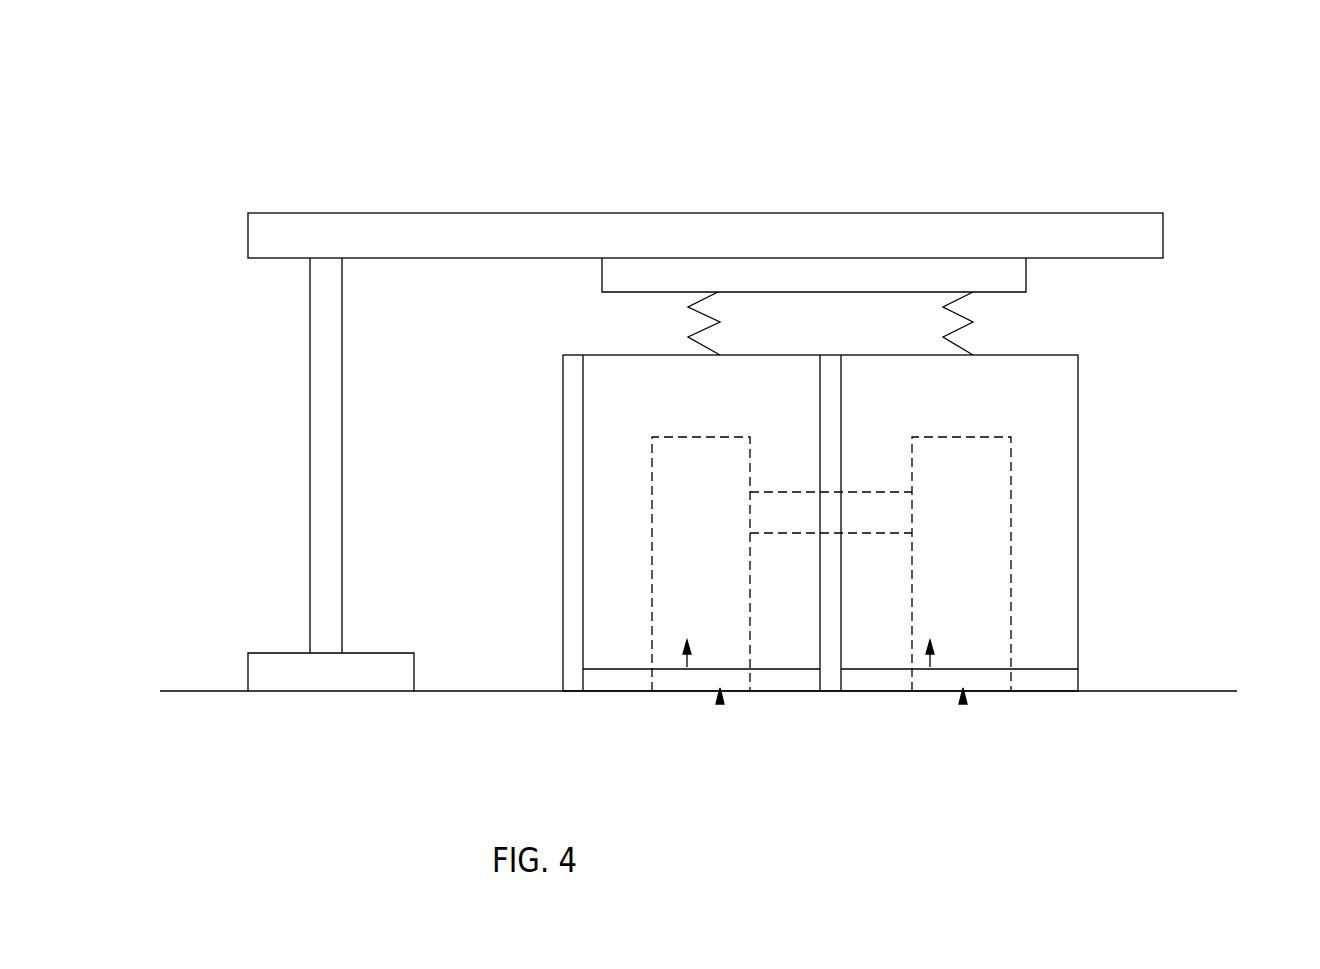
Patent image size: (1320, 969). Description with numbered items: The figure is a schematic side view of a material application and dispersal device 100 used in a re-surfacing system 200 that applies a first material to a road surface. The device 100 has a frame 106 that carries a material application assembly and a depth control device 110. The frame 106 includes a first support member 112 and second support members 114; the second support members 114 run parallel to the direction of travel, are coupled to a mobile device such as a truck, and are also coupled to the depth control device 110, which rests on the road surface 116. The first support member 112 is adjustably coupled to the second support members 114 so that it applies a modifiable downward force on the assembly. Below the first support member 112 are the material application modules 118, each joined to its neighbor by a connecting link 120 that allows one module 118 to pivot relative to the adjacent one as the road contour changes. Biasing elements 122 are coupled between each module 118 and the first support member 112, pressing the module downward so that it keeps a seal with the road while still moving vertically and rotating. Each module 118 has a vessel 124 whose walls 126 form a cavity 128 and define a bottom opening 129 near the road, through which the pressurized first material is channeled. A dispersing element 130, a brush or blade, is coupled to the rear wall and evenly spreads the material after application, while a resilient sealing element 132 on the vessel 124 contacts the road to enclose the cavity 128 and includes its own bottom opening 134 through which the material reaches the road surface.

The material application and dispersal device 100 is at (1189, 200).
The re-surfacing system 200 is at (258, 140).
The frame 106 is at (227, 225).
The depth control device 110 is at (272, 652).
The first support member 112 is at (602, 278).
The second support member 114 is at (470, 213).
The ground surface 116 is at (195, 690).
The material application module 118 is at (563, 395).
The connecting link 120 is at (862, 492).
The biasing element 122 is at (976, 326).
The vessel 124 is at (615, 551).
The wall 126 is at (605, 473).
The cavity 128 is at (652, 605).
The bottom opening 129 is at (687, 667).
The dispersing element 130 is at (567, 691).
The sealing element 132 is at (615, 681).
The bottom opening 134 is at (720, 700).